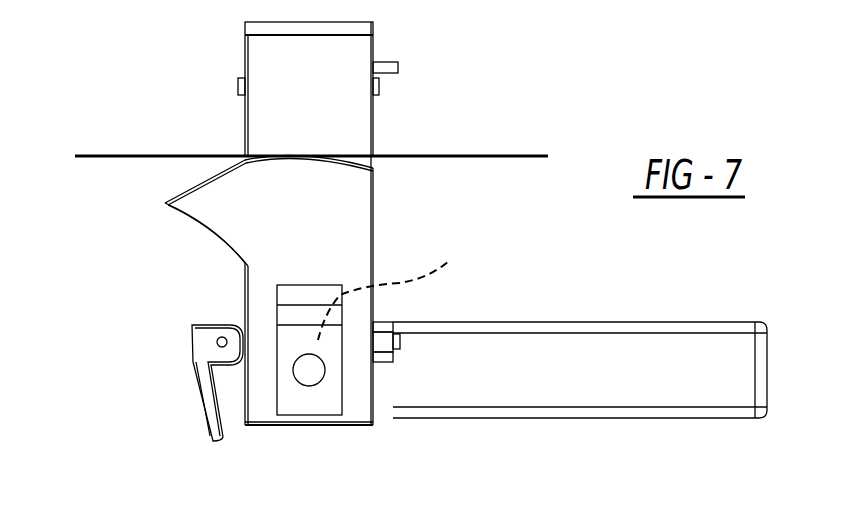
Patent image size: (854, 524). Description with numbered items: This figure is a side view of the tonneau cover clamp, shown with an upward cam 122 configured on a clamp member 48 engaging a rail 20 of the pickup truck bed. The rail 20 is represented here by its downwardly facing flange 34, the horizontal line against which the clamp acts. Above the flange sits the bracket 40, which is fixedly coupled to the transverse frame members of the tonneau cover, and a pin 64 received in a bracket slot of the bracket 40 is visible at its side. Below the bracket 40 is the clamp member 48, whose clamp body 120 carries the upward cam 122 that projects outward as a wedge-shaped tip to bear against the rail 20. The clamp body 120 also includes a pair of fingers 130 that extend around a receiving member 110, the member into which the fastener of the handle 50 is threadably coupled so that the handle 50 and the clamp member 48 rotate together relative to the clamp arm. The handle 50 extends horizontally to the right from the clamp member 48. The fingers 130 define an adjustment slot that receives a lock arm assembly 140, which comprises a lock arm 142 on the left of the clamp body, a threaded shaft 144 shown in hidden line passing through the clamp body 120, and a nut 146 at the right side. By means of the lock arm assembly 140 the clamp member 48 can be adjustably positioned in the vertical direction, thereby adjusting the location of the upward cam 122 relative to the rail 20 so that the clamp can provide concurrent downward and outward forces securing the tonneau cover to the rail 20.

The rail 20 is at (100, 157).
The downwardly facing flange 34 is at (141, 158).
The bracket 40 is at (350, 50).
The pin 64 is at (391, 68).
The clamp member 48 is at (346, 228).
The clamp body 120 is at (323, 193).
The upward cam 122 is at (197, 182).
The receiving member 110 is at (312, 402).
The threaded shaft 144 is at (402, 289).
The fingers 130 is at (260, 403).
The lock arm assembly 140 is at (207, 320).
The lock arm 142 is at (207, 350).
The nut 146 is at (383, 357).
The handle 50 is at (642, 352).